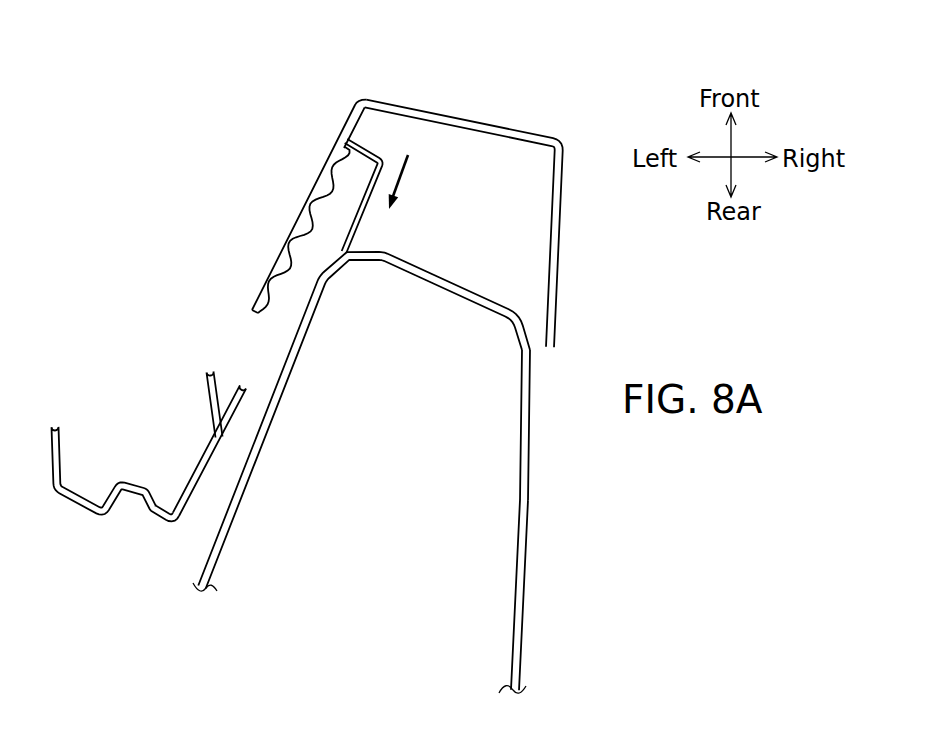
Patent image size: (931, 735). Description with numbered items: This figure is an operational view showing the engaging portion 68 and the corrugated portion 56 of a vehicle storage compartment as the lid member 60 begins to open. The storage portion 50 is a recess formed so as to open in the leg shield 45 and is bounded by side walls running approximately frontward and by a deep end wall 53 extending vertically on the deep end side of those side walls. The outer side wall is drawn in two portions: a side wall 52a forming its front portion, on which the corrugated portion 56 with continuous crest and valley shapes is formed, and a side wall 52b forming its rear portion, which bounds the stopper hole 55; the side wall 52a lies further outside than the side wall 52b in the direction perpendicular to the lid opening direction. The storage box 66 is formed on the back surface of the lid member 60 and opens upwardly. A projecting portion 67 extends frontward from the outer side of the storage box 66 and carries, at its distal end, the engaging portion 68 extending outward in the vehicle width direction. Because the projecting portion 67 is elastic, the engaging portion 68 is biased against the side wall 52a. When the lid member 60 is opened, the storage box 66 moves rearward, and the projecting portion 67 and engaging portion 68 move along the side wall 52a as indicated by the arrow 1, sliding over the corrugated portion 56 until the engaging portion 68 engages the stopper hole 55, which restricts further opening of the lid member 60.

The storage portion 50 is at (503, 240).
The deep end wall 53 is at (490, 131).
The side wall 52a is at (366, 124).
The corrugated portion 56 is at (313, 250).
The engaging portion 68 is at (359, 162).
The projecting portion 67 is at (368, 213).
The storage box 66 is at (531, 481).
The lid member 60 is at (537, 601).
The arrow 1 is at (412, 160).
The leg shield 45 is at (165, 520).
The side wall 52b is at (242, 432).
The stopper hole 55 is at (248, 384).